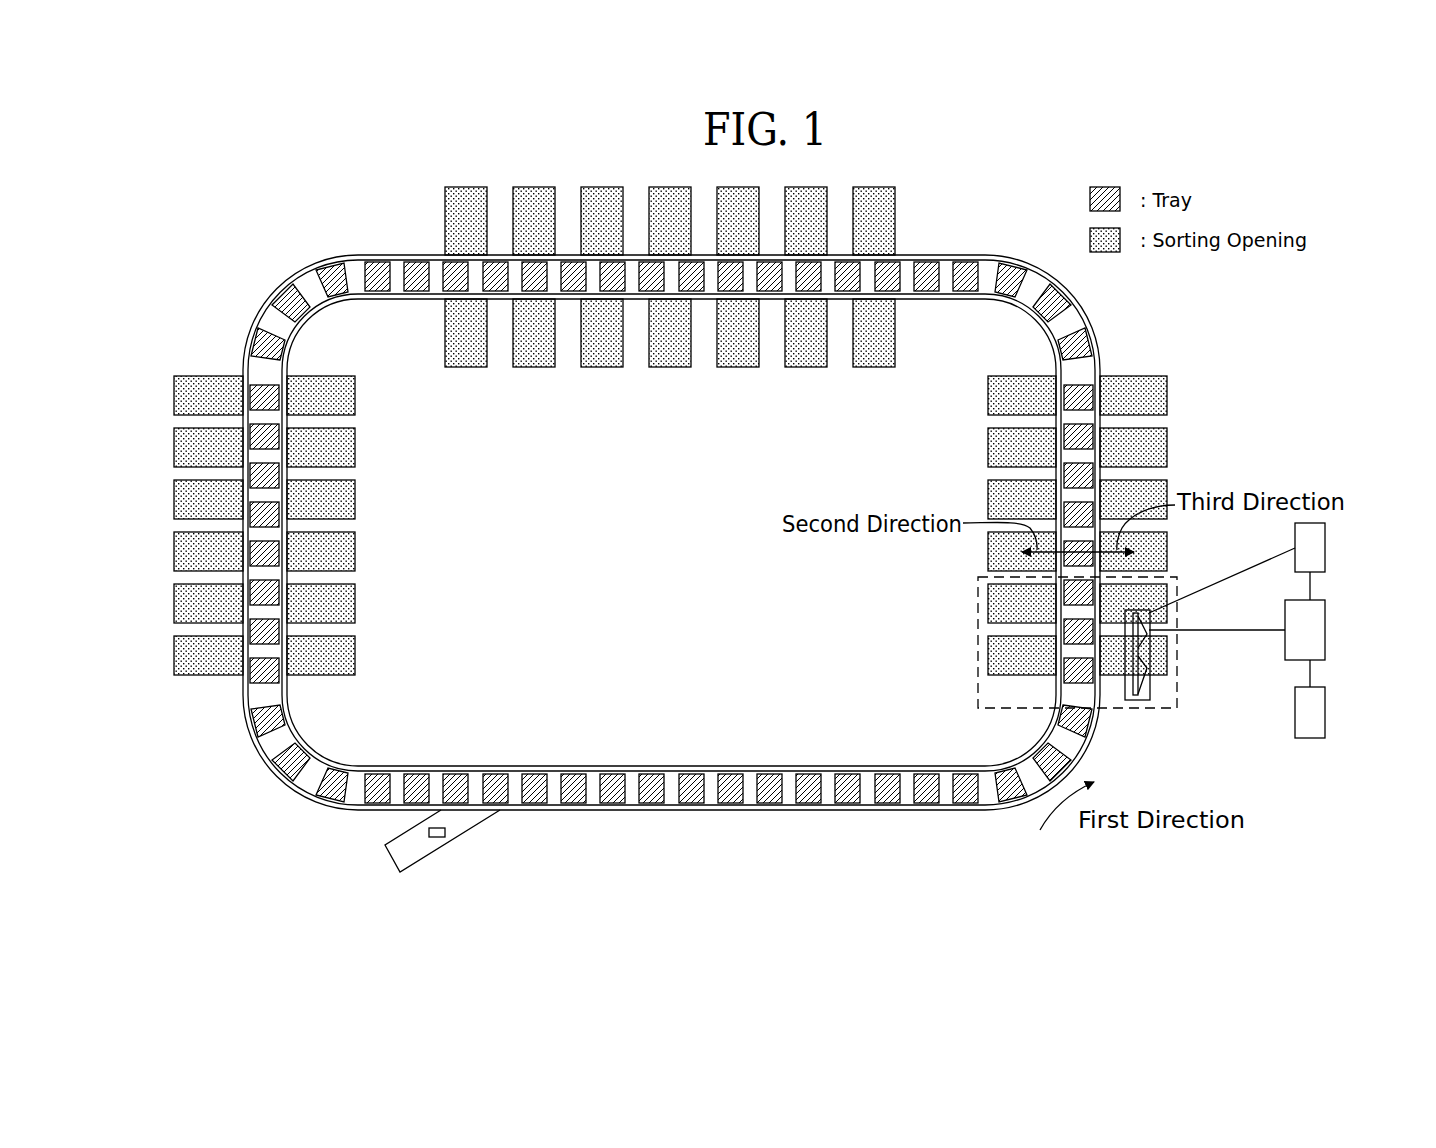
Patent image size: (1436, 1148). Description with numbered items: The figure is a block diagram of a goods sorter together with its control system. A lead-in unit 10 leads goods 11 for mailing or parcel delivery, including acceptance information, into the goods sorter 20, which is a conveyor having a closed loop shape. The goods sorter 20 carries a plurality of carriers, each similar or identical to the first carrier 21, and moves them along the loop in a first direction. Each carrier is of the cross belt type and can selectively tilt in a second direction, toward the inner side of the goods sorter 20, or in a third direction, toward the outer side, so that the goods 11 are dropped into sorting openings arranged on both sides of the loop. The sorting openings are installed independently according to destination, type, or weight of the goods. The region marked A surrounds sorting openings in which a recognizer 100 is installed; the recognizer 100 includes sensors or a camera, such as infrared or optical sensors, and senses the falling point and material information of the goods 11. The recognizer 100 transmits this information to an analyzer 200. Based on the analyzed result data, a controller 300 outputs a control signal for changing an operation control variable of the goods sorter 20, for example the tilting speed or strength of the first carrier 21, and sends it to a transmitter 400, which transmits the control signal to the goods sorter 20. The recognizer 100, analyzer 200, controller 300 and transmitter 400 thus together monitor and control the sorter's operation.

The lead-in unit 10 is at (385, 858).
The goods 11 is at (436, 840).
The goods sorter 20 is at (671, 533).
The first carrier 21 is at (612, 803).
The recognizer 100 is at (1128, 703).
The analyzer 200 is at (1326, 548).
The controller 300 is at (1326, 630).
The transmitter 400 is at (1326, 713).
The region A is at (1180, 690).